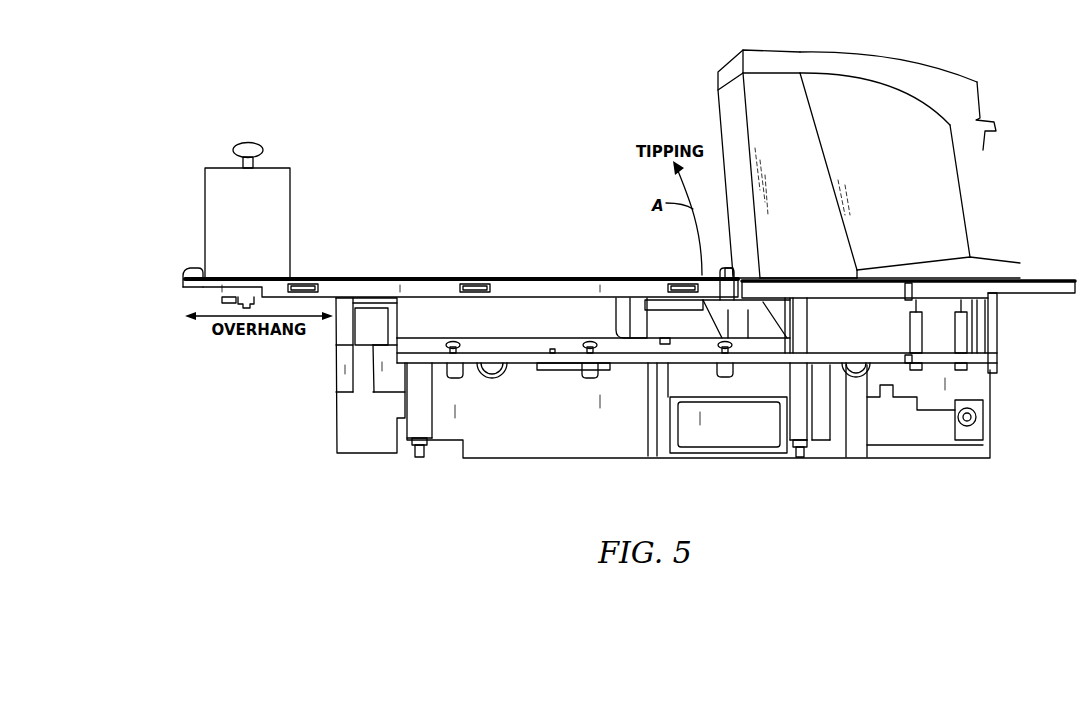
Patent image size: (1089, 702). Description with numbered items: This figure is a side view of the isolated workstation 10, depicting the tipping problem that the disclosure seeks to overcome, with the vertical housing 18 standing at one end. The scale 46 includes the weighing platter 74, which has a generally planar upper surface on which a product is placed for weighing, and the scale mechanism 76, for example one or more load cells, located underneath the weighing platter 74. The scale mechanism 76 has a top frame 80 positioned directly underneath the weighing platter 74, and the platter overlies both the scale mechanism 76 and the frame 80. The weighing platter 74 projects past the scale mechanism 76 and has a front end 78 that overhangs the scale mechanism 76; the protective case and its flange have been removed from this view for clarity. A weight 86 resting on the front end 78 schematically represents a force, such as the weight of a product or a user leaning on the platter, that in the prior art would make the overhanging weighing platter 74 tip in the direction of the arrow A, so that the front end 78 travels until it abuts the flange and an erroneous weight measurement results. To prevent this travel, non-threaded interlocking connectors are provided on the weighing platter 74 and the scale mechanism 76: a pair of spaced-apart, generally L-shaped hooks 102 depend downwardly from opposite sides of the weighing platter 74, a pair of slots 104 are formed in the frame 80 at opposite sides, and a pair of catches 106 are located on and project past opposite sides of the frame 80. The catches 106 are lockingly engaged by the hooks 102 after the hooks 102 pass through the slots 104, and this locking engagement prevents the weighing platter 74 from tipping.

The scanner system 10 is at (896, 166).
The vertical scanner housing 18 is at (863, 57).
The scale 46 is at (351, 399).
The weighing platter 74 is at (377, 288).
The scale mechanism 76 is at (383, 446).
The front end 78 is at (210, 288).
The top frame 80 is at (540, 312).
The weight 86 is at (285, 192).
The hooks 102 is at (640, 313).
The slots 104 is at (613, 340).
The catches 106 is at (660, 303).